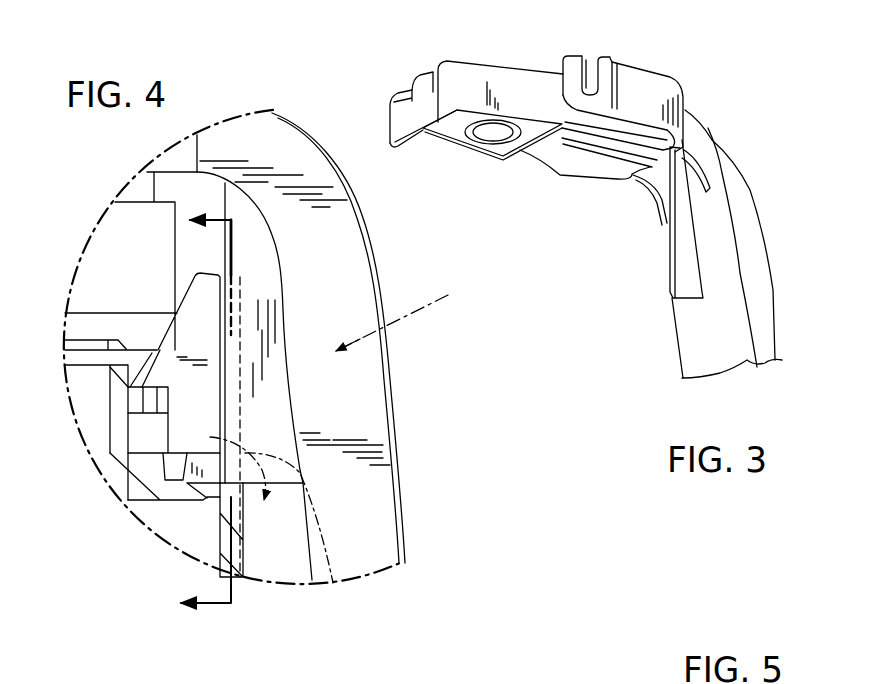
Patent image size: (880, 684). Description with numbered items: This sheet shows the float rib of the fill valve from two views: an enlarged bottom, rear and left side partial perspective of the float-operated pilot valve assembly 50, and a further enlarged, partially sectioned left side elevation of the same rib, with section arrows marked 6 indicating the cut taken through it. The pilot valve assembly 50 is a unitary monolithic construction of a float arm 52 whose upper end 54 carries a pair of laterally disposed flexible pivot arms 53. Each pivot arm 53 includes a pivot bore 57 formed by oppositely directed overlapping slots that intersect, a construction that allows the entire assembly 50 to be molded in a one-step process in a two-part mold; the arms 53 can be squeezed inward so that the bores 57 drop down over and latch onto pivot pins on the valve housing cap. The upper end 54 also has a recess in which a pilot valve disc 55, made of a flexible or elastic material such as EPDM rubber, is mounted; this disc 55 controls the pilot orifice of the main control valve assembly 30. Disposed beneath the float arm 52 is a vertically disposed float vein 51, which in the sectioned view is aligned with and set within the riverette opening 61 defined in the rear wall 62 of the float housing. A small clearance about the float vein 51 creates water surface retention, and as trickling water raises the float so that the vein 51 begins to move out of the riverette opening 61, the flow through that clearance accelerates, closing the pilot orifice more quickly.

In FIG. 3, the float-operated pilot valve assembly 50 is at (740, 66).
In FIG. 4, the float vein 51 is at (258, 292).
In FIG. 3, the float vein 51 is at (687, 272).
In FIG. 4, the float arm 52 is at (372, 405).
In FIG. 3, the float arm 52 is at (740, 247).
In FIG. 3, the flexible pivot arms 53 is at (638, 90).
In FIG. 3, the upper end 54 is at (520, 90).
In FIG. 3, the pilot valve disc 55 is at (495, 134).
In FIG. 3, the pivot bores 57 is at (588, 63).
In FIG. 4, the section line 6- 6 is at (205, 415).
In FIG. 4, the main control valve assembly 30 is at (117, 432).
In FIG. 4, the riverette opening 61 is at (233, 362).
In FIG. 4, the rear wall 62 is at (200, 327).